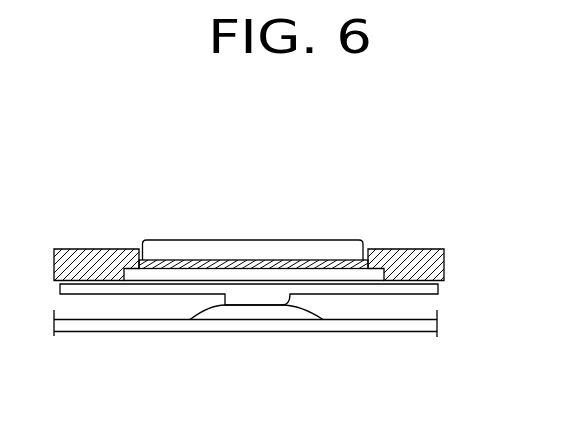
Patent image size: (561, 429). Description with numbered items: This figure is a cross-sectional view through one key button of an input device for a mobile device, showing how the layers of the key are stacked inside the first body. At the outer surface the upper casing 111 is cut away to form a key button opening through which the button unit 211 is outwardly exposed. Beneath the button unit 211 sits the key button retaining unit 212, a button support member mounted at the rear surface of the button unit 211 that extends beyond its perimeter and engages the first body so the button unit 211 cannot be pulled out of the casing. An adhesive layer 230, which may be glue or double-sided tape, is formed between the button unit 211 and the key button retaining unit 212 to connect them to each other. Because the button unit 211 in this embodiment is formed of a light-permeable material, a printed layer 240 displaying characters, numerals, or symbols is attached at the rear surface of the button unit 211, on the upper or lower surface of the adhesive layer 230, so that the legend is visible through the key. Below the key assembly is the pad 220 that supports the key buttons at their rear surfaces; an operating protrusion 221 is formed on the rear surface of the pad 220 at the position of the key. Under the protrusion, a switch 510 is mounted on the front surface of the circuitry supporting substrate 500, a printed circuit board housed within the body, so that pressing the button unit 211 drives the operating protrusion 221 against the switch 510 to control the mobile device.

The pad 220 is at (265, 214).
The upper casing 111 is at (98, 214).
The adhesive layer 230 is at (253, 199).
The button unit 211 is at (253, 194).
The key button retaining unit 212 is at (254, 205).
The operating protrusion 221 is at (249, 217).
The printed layer 240 is at (355, 240).
The switch 510 is at (256, 362).
The circuitry supporting substrate 500 is at (245, 365).